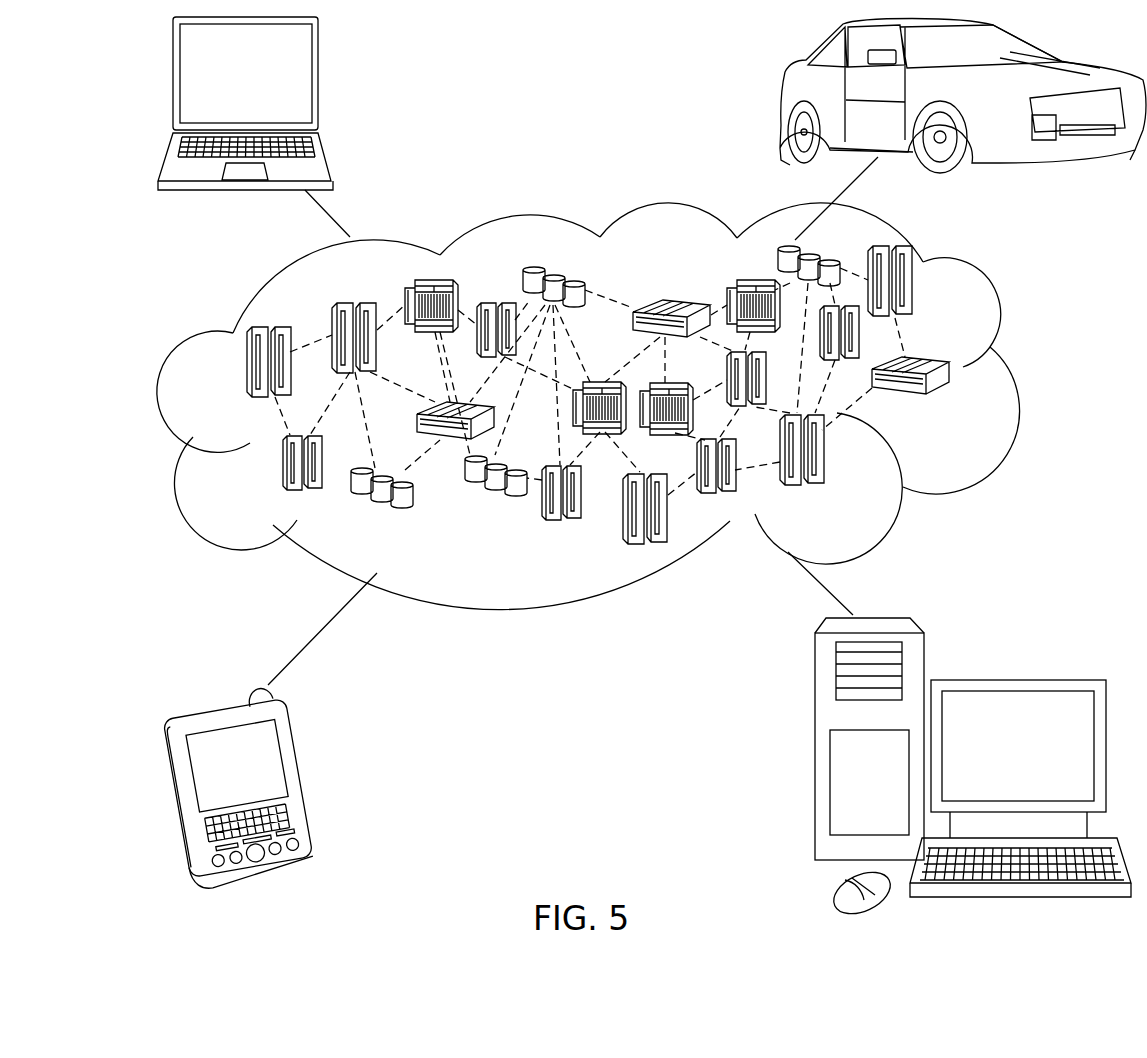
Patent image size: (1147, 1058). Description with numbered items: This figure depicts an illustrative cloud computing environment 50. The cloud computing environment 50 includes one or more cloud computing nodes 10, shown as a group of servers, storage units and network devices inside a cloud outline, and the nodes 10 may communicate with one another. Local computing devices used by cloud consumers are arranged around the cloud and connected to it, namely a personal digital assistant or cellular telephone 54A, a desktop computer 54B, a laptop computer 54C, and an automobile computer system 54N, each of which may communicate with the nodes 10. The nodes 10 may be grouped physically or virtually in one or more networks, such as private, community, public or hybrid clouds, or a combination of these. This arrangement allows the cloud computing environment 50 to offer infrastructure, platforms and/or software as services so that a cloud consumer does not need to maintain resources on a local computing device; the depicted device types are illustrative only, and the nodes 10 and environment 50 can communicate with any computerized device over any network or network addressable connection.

The cloud computing nodes 10 is at (955, 406).
The cloud computing environment 50 is at (1017, 373).
The personal digital assistant or cellular telephone 54A is at (310, 778).
The desktop computer 54B is at (1015, 679).
The laptop computer 54C is at (318, 84).
The automobile computer system 54N is at (783, 98).